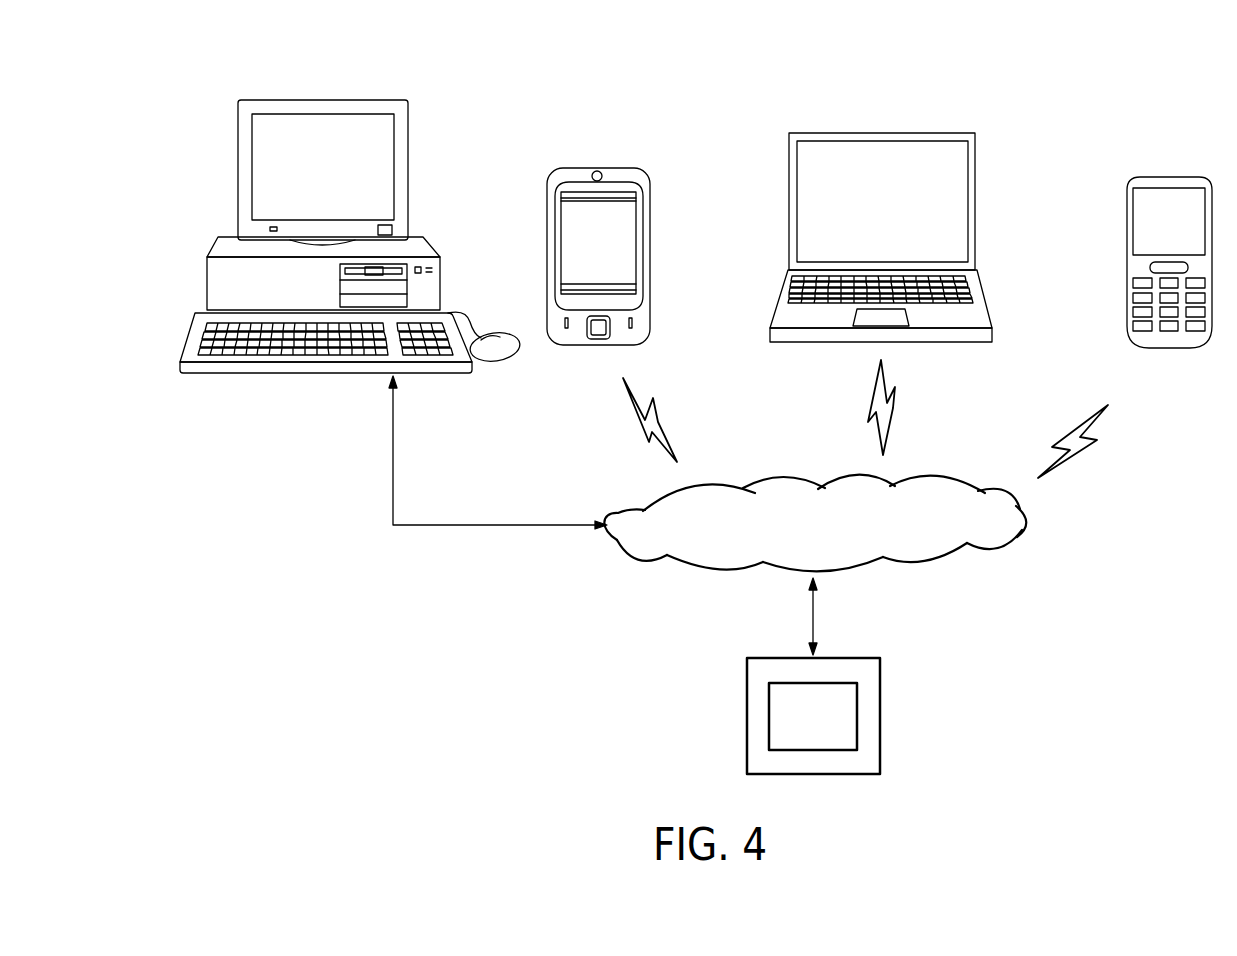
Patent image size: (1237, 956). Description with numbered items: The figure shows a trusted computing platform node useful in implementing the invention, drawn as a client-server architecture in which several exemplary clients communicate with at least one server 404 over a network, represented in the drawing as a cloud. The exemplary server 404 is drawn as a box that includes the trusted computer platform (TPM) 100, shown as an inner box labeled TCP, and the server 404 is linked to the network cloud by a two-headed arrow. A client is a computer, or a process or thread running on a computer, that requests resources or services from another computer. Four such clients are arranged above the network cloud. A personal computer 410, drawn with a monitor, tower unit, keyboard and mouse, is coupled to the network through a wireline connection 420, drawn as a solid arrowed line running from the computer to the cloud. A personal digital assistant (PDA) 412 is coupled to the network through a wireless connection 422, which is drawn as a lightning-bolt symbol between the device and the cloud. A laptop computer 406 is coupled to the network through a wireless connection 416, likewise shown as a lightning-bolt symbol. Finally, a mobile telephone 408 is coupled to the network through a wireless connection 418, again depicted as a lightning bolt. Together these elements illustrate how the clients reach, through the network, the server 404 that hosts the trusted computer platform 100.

The trusted computer platform (TPM) 100 is at (769, 713).
The server 404 is at (881, 668).
The laptop computer 406 is at (884, 133).
The mobile telephone 408 is at (1168, 177).
The personal computer 410 is at (320, 100).
The personal digital assistant (PDA) 412 is at (598, 168).
The wireless connection 416 is at (898, 399).
The wireless connection 418 is at (1108, 405).
The wireline connection 420 is at (393, 462).
The wireless connection 422 is at (661, 416).